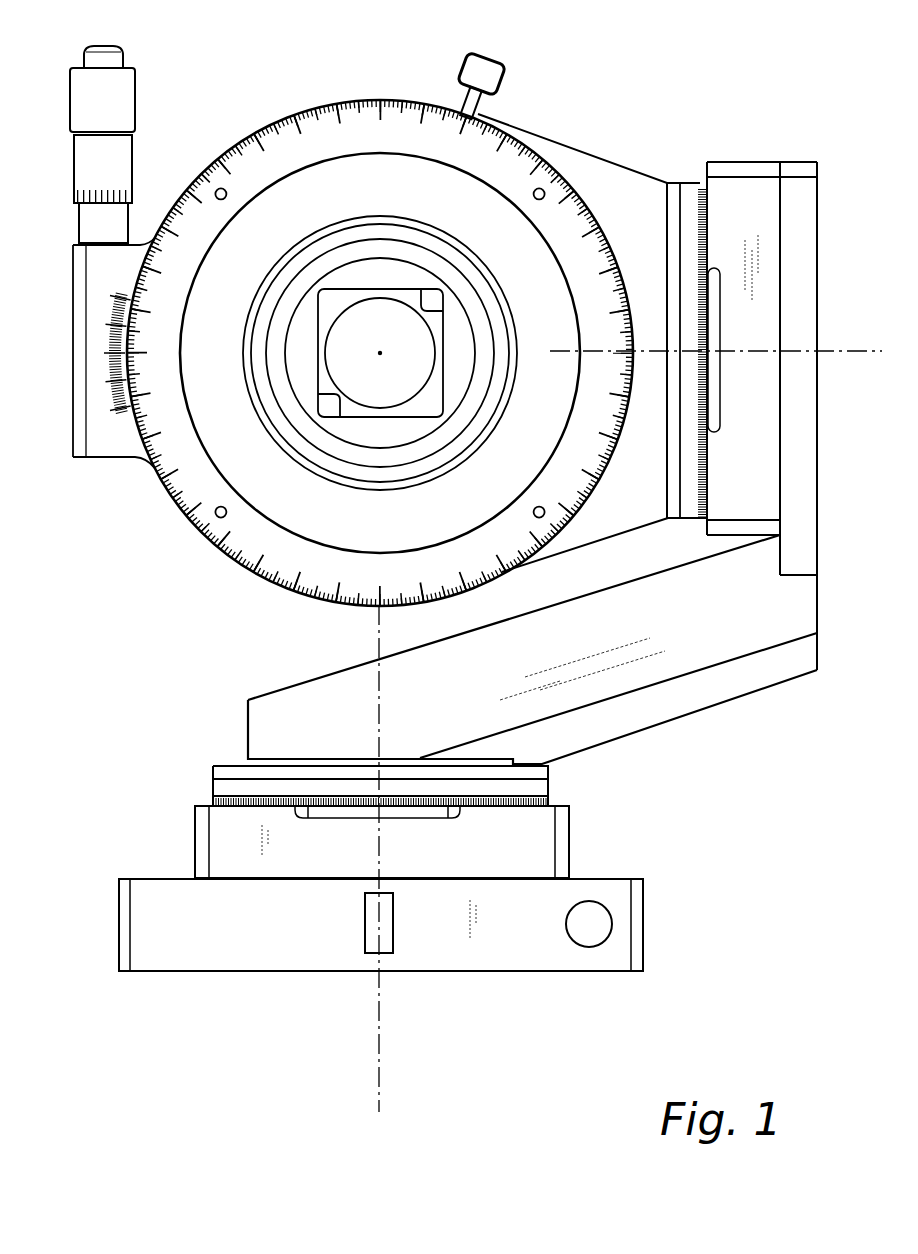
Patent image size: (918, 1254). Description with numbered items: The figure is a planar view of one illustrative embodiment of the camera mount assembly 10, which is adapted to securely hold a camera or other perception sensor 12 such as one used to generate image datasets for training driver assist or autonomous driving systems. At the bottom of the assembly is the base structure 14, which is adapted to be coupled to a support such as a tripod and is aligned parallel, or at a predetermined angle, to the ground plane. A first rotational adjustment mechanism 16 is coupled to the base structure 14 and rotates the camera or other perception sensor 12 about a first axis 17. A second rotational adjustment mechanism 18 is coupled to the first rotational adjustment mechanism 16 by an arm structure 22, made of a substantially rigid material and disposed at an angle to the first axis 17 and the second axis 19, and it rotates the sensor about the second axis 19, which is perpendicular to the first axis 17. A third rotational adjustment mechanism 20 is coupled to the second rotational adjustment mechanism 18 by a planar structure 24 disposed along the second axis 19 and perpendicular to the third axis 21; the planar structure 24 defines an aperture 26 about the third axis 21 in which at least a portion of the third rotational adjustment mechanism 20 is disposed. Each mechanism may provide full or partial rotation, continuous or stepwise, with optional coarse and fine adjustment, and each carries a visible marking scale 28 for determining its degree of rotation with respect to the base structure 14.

The camera mount assembly 10 is at (787, 148).
The camera or other perception sensor 12 is at (452, 287).
The base structure 14 is at (665, 901).
The first rotational adjustment mechanism 16 is at (197, 760).
The first axis 17 is at (387, 748).
The second rotational adjustment mechanism 18 is at (688, 168).
The second axis 19 is at (797, 350).
The third rotational adjustment mechanism 20 is at (197, 160).
The third axis 21 is at (380, 345).
The arm structure 22 is at (250, 685).
The planar structure 24 is at (638, 153).
The aperture 26 is at (525, 112).
The visible marking scale 28 is at (175, 191).